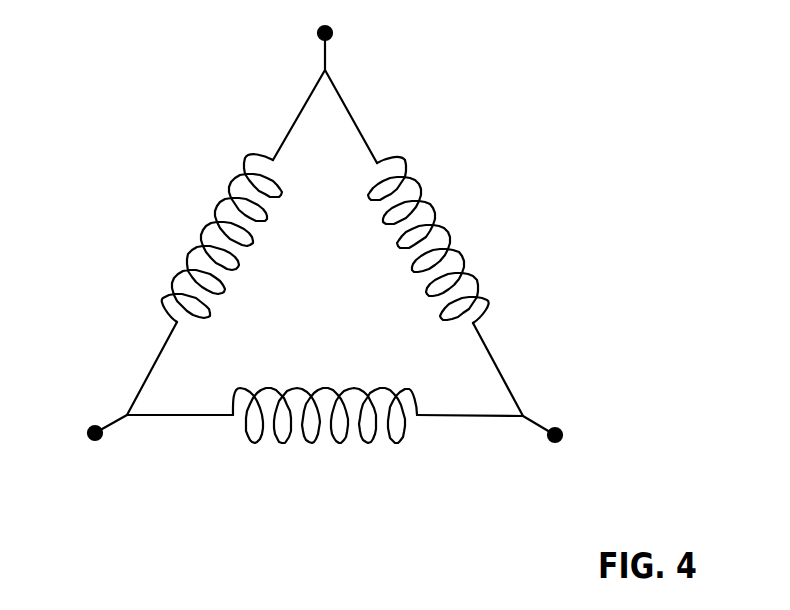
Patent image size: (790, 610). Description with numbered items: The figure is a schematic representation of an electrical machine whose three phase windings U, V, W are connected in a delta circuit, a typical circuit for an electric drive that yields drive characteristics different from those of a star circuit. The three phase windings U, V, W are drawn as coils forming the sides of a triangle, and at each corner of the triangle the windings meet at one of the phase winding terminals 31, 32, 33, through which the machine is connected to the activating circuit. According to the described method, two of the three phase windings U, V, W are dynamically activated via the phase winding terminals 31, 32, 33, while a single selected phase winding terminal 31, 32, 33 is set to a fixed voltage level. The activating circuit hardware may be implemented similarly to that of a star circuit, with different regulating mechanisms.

The phase winding terminal 31 is at (89, 436).
The phase winding terminal 32 is at (331, 35).
The phase winding terminal 33 is at (561, 437).
The phase winding U is at (179, 212).
The phase winding V is at (468, 220).
The phase winding W is at (325, 463).